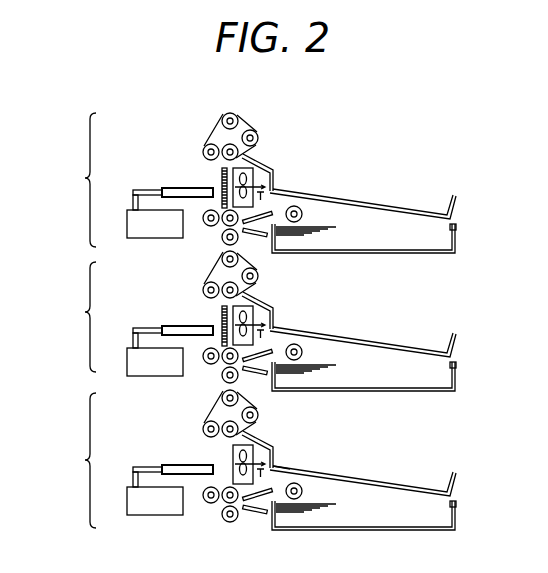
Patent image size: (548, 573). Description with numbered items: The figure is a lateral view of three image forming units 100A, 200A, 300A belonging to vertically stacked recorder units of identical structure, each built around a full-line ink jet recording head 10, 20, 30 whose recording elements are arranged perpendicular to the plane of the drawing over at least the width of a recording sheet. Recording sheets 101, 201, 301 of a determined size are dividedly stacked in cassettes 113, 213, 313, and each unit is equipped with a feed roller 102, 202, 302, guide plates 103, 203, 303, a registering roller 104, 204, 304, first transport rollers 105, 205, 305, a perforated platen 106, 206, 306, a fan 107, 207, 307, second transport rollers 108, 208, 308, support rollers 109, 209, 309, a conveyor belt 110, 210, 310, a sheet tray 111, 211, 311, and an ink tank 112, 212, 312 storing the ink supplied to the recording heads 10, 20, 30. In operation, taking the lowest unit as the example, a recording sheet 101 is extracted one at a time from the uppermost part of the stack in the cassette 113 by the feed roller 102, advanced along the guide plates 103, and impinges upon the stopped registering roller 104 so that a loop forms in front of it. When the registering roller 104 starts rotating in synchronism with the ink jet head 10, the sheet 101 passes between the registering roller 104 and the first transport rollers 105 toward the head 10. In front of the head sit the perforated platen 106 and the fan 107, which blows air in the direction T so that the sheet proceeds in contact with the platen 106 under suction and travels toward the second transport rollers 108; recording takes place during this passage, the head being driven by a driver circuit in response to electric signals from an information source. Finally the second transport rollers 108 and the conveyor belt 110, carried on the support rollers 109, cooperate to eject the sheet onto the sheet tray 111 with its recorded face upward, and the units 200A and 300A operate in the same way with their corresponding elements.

The image forming unit 300A is at (63, 180).
The image forming unit 200A is at (64, 317).
The image forming unit 100A is at (64, 460).
The recording head 30 is at (170, 188).
The recording head 20 is at (170, 326).
The ink jet head 10 is at (170, 465).
The conveyor belt 310 is at (222, 118).
The conveyor belt 210 is at (203, 286).
The conveyor belt 110 is at (203, 426).
The support roller 309 is at (240, 116).
The support roller 209 is at (265, 268).
The support roller 109 is at (258, 414).
The second transport rollers 308 is at (222, 147).
The second transport rollers 208 is at (204, 292).
The second transport rollers 108 is at (206, 436).
The fan 307 is at (273, 168).
The fan 207 is at (273, 307).
The fan 107 is at (274, 446).
The perforated platen 306 is at (221, 176).
The perforated platen 206 is at (222, 316).
The perforated platen 106 is at (278, 463).
The guide plates 303 is at (268, 212).
The guide plates 203 is at (268, 350).
The guide plates 103 is at (262, 512).
The sheet tray 311 is at (360, 203).
The sheet tray 211 is at (380, 342).
The sheet tray 111 is at (375, 482).
The feed roller 302 is at (302, 215).
The feed roller 202 is at (302, 352).
The feed roller 102 is at (302, 491).
The recording sheet 301 is at (367, 228).
The recording sheet 201 is at (367, 366).
The recording sheet 101 is at (372, 505).
The cassette 313 is at (458, 241).
The cassette 213 is at (458, 379).
The cassette 113 is at (458, 518).
The ink tank 312 is at (137, 232).
The ink tank 212 is at (137, 371).
The ink tank 112 is at (145, 512).
The first transport rollers 305 is at (224, 238).
The first transport rollers 205 is at (224, 377).
The first transport rollers 105 is at (222, 510).
The registering roller 304 is at (224, 247).
The registering roller 204 is at (225, 385).
The registering roller 104 is at (226, 521).